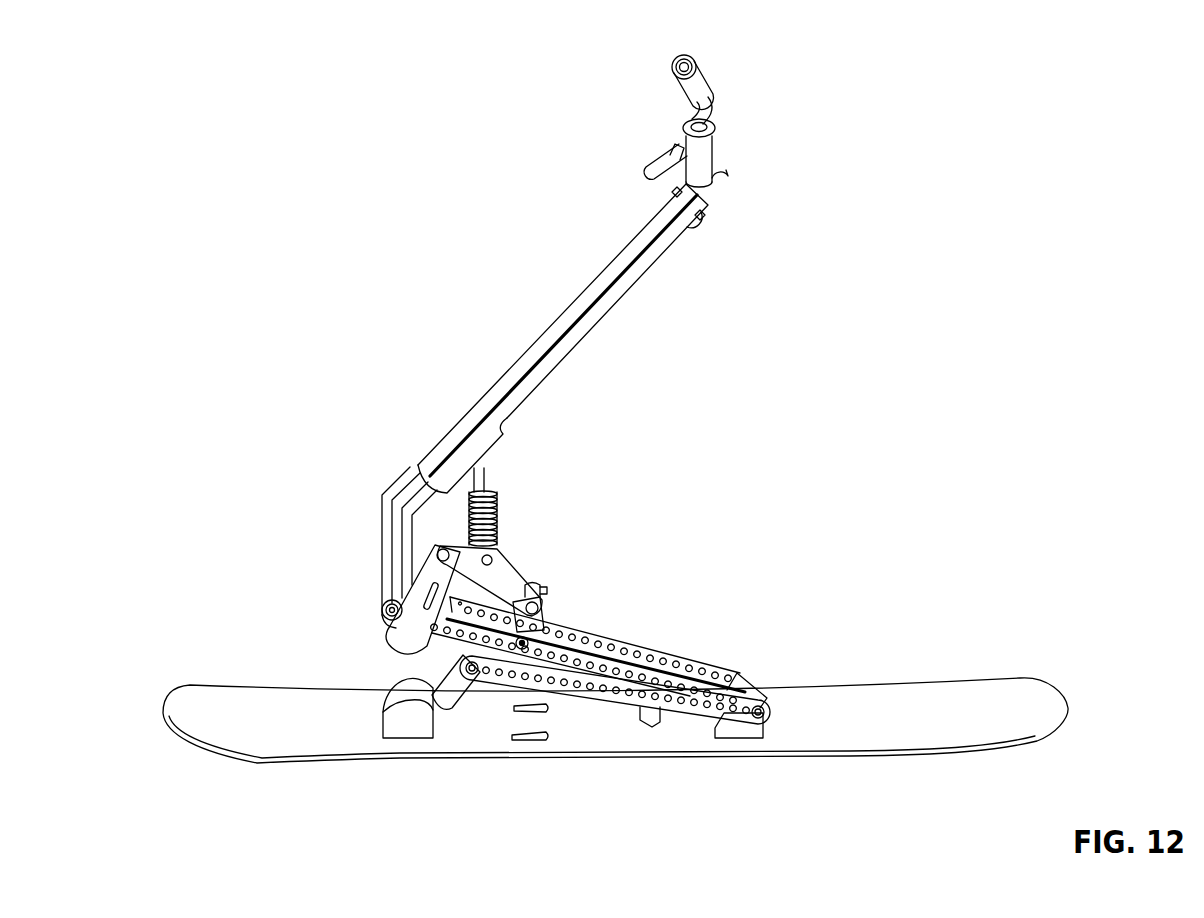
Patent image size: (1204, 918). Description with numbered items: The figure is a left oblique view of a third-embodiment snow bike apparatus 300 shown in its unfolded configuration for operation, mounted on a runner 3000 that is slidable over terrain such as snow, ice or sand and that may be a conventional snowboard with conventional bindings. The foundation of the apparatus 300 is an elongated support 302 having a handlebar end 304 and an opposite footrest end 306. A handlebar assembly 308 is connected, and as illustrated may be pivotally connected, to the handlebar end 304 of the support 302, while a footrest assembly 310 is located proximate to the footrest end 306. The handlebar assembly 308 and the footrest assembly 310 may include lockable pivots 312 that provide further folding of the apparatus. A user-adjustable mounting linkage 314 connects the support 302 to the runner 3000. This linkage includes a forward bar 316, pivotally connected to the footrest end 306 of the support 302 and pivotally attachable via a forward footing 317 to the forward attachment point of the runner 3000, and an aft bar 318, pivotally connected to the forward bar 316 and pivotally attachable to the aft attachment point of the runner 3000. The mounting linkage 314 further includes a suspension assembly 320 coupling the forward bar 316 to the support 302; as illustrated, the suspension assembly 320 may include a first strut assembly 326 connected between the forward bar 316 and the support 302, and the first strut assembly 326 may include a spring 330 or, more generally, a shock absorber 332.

The snow bike apparatus 300 is at (580, 331).
The elongated support 302 is at (538, 333).
The handlebar end 304 is at (647, 225).
The footrest end 306 is at (463, 440).
The handlebar assembly 308 is at (702, 85).
The footrest assembly 310 is at (400, 637).
The lockable pivots 312 is at (723, 178).
The user-adjustable mounting linkage 314 is at (547, 557).
The forward bar 316 is at (602, 640).
The forward footing 317 is at (747, 678).
The aft bar 318 is at (648, 695).
The suspension assembly 320 is at (497, 533).
The first strut assembly 326 is at (485, 483).
The spring 330 is at (493, 518).
The shock absorber 332 is at (587, 496).
The runner 3000 is at (882, 692).